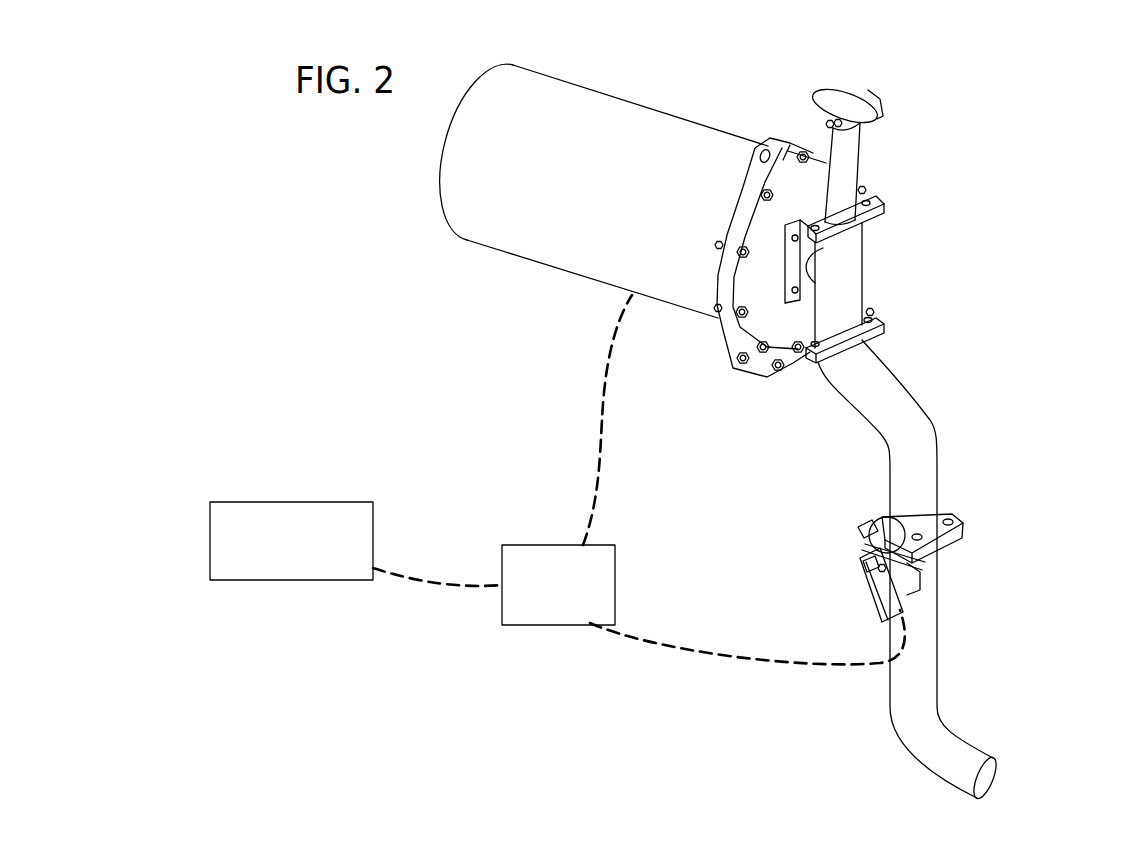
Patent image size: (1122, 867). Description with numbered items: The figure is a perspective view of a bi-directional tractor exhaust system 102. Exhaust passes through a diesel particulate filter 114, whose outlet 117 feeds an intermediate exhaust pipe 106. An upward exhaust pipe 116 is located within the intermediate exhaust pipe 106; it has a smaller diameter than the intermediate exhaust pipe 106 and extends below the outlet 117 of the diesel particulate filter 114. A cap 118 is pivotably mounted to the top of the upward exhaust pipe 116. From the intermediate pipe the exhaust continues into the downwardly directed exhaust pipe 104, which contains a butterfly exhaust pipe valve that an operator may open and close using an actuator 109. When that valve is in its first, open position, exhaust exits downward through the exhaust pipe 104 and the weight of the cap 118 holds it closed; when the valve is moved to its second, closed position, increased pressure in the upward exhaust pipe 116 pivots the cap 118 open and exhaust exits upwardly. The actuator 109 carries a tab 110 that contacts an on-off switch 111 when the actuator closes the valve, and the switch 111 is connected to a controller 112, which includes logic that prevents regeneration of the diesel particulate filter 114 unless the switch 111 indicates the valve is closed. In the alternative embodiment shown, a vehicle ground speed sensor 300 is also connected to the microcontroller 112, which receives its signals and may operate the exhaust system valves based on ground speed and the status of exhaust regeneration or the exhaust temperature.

The exhaust system assembly 102 is at (1038, 143).
The downwardly directed exhaust pipe 104 is at (927, 673).
The intermediate exhaust pipe 106 is at (848, 280).
The actuator 109 is at (887, 532).
The tab 110 is at (870, 527).
The on-off switch 111 is at (873, 563).
The controller 112 is at (541, 545).
The diesel particulate filter 114 is at (585, 133).
The upward exhaust pipe 116 is at (847, 152).
The outlet 117 is at (810, 263).
The cap 118 is at (848, 102).
The vehicle ground speed sensor 300 is at (265, 502).